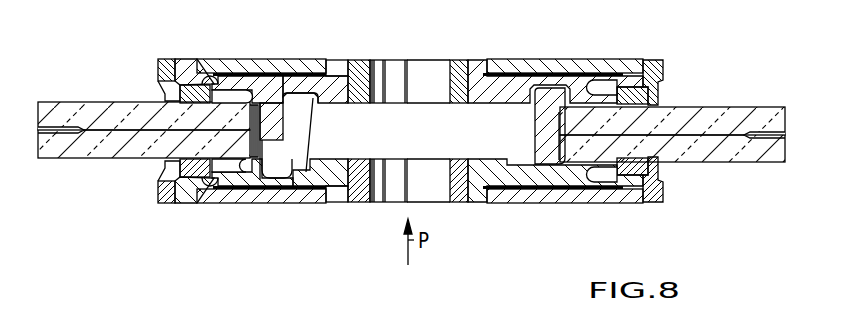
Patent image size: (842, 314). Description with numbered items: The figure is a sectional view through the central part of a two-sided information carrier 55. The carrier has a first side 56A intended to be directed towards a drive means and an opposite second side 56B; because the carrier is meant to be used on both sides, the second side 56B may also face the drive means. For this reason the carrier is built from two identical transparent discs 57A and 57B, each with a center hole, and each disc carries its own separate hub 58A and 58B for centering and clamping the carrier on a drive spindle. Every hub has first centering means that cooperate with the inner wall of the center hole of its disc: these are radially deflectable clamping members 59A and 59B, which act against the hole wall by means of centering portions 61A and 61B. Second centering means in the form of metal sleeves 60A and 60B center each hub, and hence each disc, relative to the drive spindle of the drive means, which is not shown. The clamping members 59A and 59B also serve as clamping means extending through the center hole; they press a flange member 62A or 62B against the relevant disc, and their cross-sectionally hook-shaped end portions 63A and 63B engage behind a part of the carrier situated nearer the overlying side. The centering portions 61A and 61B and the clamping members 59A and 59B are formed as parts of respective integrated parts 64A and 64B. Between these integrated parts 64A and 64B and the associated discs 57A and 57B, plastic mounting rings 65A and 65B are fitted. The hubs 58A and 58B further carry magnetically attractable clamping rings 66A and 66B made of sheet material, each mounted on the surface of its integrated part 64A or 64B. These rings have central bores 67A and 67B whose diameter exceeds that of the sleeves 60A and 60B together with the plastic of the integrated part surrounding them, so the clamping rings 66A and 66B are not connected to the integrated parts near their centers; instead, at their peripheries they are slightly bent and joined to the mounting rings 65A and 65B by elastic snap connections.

The information carrier 55 is at (700, 98).
The first side 56A is at (746, 162).
The second side 56B is at (755, 107).
The transparent disc 57A is at (72, 150).
The transparent disc 57B is at (86, 110).
The hub 58A is at (670, 218).
The hub 58B is at (655, 48).
The clamping member 59A is at (536, 117).
The clamping member 59B is at (284, 135).
The metal sleeve 60A is at (457, 203).
The metal sleeve 60B is at (463, 62).
The centering portion 61A is at (536, 142).
The centering portion 61B is at (278, 108).
The flange member 62A is at (228, 178).
The flange member 62B is at (256, 83).
The hook-shaped end portion 63A is at (563, 80).
The hook-shaped end portion 63B is at (264, 174).
The integrated part 64A is at (307, 190).
The integrated part 64B is at (309, 90).
The mounting ring 65A is at (165, 169).
The mounting ring 65B is at (192, 88).
The clamping ring 66A is at (527, 204).
The clamping ring 66B is at (508, 62).
The central bore 67A is at (334, 203).
The central bore 67B is at (341, 64).